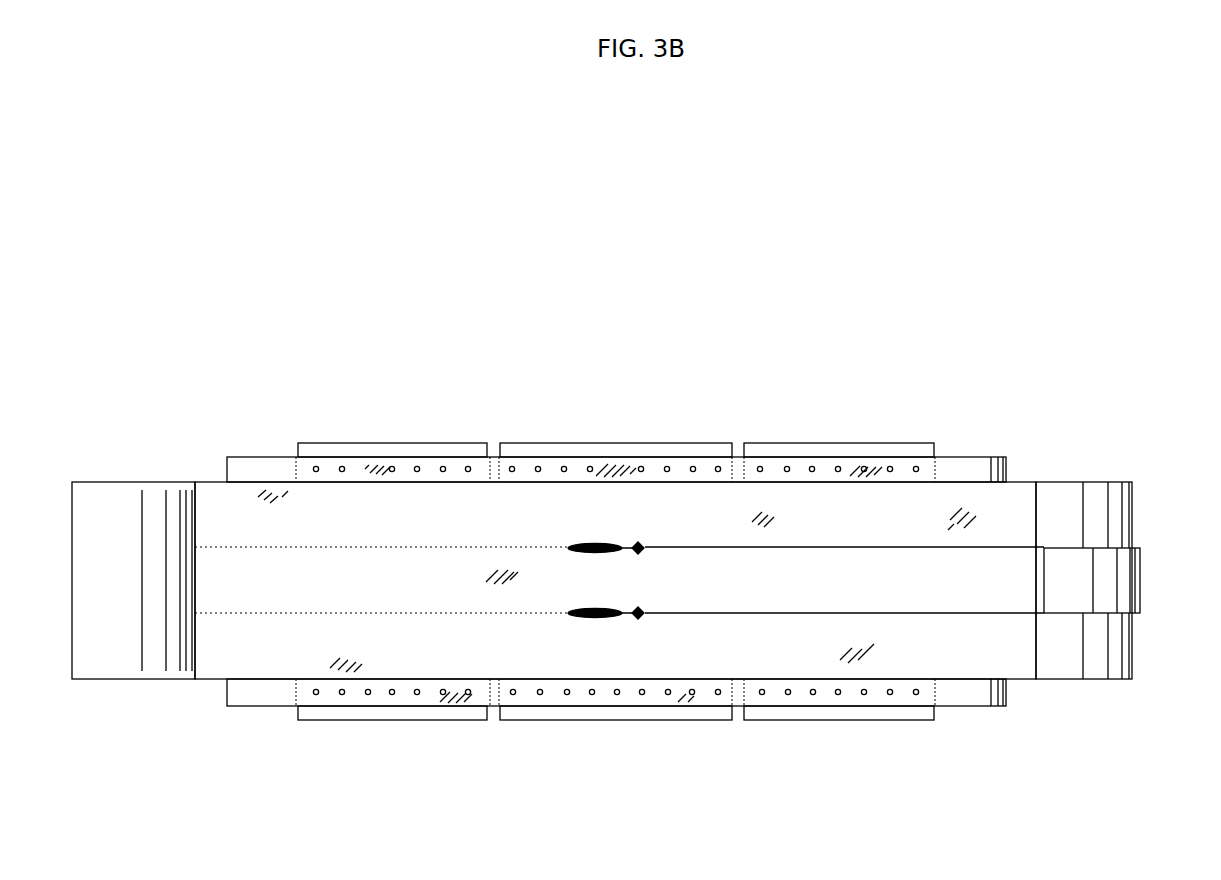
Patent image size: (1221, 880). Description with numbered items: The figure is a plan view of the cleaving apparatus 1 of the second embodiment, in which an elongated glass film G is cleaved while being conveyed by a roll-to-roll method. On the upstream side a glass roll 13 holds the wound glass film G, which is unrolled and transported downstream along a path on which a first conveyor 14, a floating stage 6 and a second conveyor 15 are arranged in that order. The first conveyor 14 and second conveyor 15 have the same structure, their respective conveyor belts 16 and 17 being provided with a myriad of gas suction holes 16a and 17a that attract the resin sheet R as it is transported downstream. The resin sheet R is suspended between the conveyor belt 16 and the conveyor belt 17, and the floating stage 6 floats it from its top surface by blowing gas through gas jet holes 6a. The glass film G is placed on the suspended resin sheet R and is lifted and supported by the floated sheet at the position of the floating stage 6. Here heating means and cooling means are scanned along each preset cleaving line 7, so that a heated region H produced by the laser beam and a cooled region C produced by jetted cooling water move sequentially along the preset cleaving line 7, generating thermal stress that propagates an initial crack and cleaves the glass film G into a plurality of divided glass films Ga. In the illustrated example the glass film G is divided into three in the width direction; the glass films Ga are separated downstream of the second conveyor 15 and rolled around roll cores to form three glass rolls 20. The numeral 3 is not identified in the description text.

The cleaving apparatus 1 is at (715, 381).
The optical waveguide (middle section) 3 is at (603, 445).
The floating stage 6 is at (681, 455).
The gas jet holes 6a is at (538, 466).
The preset cleaving line 7 is at (405, 547).
The glass roll 13 is at (119, 483).
The first conveyor 14 is at (394, 444).
The second conveyor 15 is at (837, 444).
The conveyor belt 16 is at (336, 451).
The gas suction holes 16a is at (468, 466).
The conveyor belt 17 is at (889, 452).
The gas suction holes 17a is at (787, 466).
The glass rolls 20 is at (1092, 482).
The resin sheet R is at (262, 462).
The glass film G is at (262, 665).
The divided glass films Ga is at (957, 495).
The heated region H is at (590, 545).
The cooled region C is at (641, 542).